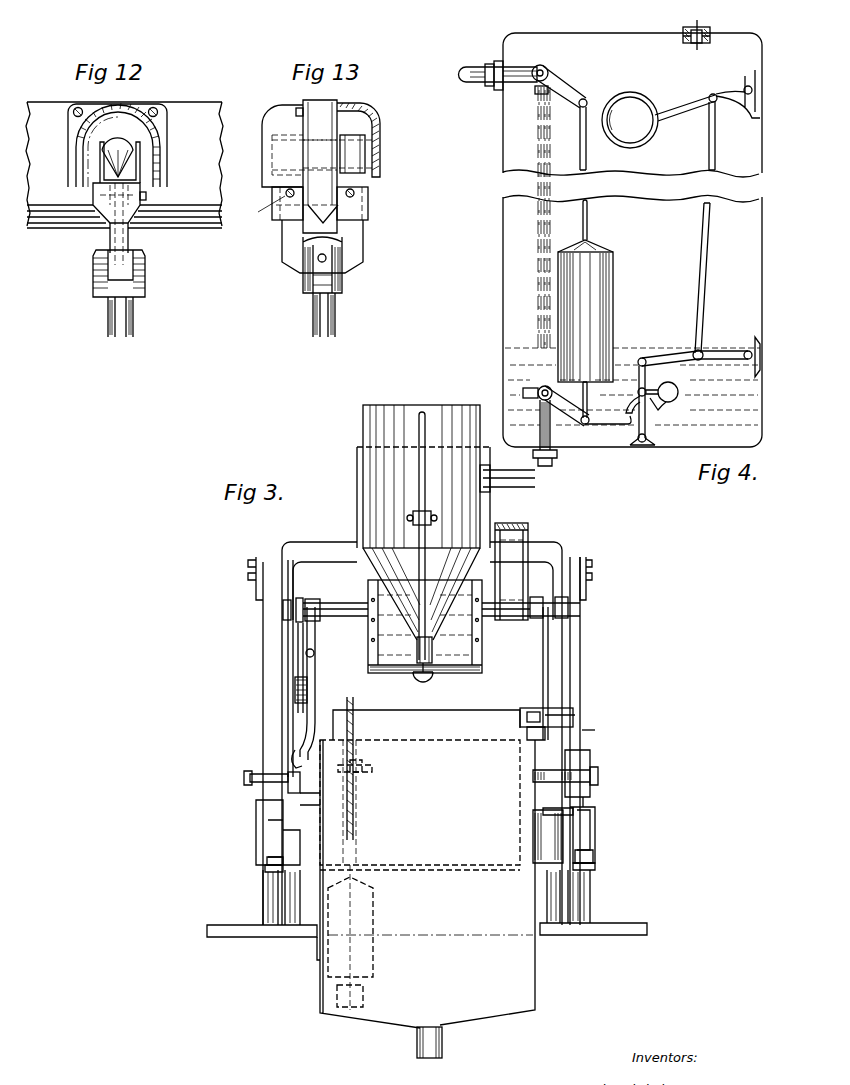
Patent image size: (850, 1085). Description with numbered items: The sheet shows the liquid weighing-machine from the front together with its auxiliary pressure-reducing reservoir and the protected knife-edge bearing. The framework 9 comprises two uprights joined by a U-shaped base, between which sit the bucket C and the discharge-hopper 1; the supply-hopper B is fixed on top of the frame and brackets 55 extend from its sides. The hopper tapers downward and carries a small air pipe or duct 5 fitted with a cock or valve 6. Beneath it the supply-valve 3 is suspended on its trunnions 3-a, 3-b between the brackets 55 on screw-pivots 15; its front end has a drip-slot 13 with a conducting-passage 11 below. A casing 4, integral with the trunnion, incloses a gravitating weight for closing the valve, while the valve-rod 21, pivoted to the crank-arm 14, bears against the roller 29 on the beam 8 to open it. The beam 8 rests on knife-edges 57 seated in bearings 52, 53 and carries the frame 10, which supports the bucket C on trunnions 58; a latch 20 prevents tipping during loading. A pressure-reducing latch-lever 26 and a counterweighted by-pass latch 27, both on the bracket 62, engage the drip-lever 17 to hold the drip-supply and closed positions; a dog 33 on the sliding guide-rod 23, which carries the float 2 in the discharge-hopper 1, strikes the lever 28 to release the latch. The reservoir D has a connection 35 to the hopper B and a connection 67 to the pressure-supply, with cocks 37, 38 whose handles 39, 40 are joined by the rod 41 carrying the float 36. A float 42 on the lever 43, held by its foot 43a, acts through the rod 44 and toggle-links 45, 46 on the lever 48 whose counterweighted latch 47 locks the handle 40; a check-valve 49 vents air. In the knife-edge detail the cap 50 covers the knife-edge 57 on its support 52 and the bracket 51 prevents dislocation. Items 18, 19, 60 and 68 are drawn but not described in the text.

In FIG. 3, the discharge-hopper 1 is at (524, 981).
In FIG. 3, the float 2 is at (374, 965).
In FIG. 3, the supply-valve 3 is at (386, 684).
In FIG. 3, the trunnion 3-a is at (545, 597).
In FIG. 3, the trunnion 3-b is at (345, 602).
In FIG. 3, the casing 4 is at (528, 568).
In FIG. 3, the air pipe or duct 5 is at (418, 487).
In FIG. 3, the cock or valve 6 is at (433, 525).
In FIG. 12, the beam 8 is at (210, 183).
In FIG. 13, the beam 8 is at (330, 123).
In FIG. 3, the beam 8 is at (605, 838).
In FIG. 3, the framework 9 is at (548, 878).
In FIG. 3, the frame 10 is at (433, 650).
In FIG. 3, the conducting-passage 11 is at (433, 680).
In FIG. 3, the drip-slot 13 is at (423, 682).
In FIG. 3, the crank-arm 14 is at (535, 620).
In FIG. 3, the screw-pivot 15 is at (590, 610).
In FIG. 3, the drip-lever 17 is at (315, 678).
In FIG. 3, the rod 18 is at (298, 668).
In FIG. 3, the slide block 19 is at (295, 697).
In FIG. 3, the latch 20 is at (535, 708).
In FIG. 3, the valve-rod 21 is at (543, 667).
In FIG. 3, the sliding guide-rod 23 is at (362, 725).
In FIG. 3, the pressure-reducing latch-lever 26 is at (288, 800).
In FIG. 3, the counterweighted by-pass latch 27 is at (306, 754).
In FIG. 3, the lever 28 is at (355, 780).
In FIG. 3, the roller 29 is at (553, 835).
In FIG. 3, the dog 33 is at (362, 766).
In FIG. 4, the connection 35 is at (553, 463).
In FIG. 3, the connection 35 is at (530, 487).
In FIG. 4, the float 36 is at (608, 290).
In FIG. 4, the cock 37 is at (540, 386).
In FIG. 4, the cock 38 is at (547, 67).
In FIG. 4, the operating handle or lever 39 is at (570, 85).
In FIG. 4, the operating handle or lever 40 is at (568, 402).
In FIG. 4, the rod 41 is at (587, 160).
In FIG. 4, the float 42 is at (653, 136).
In FIG. 4, the lever 43 is at (688, 108).
In FIG. 4, the foot 43a is at (760, 114).
In FIG. 4, the rod 44 is at (715, 138).
In FIG. 4, the toggle-link 45 is at (704, 350).
In FIG. 4, the toggle-link 46 is at (660, 358).
In FIG. 4, the counterweighted latch 47 is at (633, 400).
In FIG. 4, the lever 48 is at (648, 414).
In FIG. 4, the check-valve 49 is at (690, 50).
In FIG. 12, the cap 50 is at (168, 128).
In FIG. 13, the cap 50 is at (392, 130).
In FIG. 12, the bracket 51 is at (140, 165).
In FIG. 13, the bracket 51 is at (262, 235).
In FIG. 12, the bearing 52 is at (129, 237).
In FIG. 13, the bearing 52 is at (355, 233).
In FIG. 3, the bearing 52 is at (604, 857).
In FIG. 12, the bearing 53 is at (145, 272).
In FIG. 13, the bearing 53 is at (342, 282).
In FIG. 3, the bearing 53 is at (603, 868).
In FIG. 3, the bracket 55 is at (290, 625).
In FIG. 12, the knife-edge 57 is at (112, 147).
In FIG. 13, the knife-edge 57 is at (365, 157).
In FIG. 3, the trunnion 58 is at (608, 777).
In FIG. 3, the outlet 60 is at (432, 1044).
In FIG. 3, the bracket 62 is at (305, 803).
In FIG. 4, the connection 67 is at (470, 86).
In FIG. 3, the connection 67 is at (314, 655).
In FIG. 12, the screw 68 is at (147, 196).
In FIG. 13, the screw 68 is at (266, 210).
In FIG. 3, the supply-hopper B is at (365, 423).
In FIG. 3, the bucket C is at (472, 718).
In FIG. 4, the tank or reservoir D is at (747, 272).